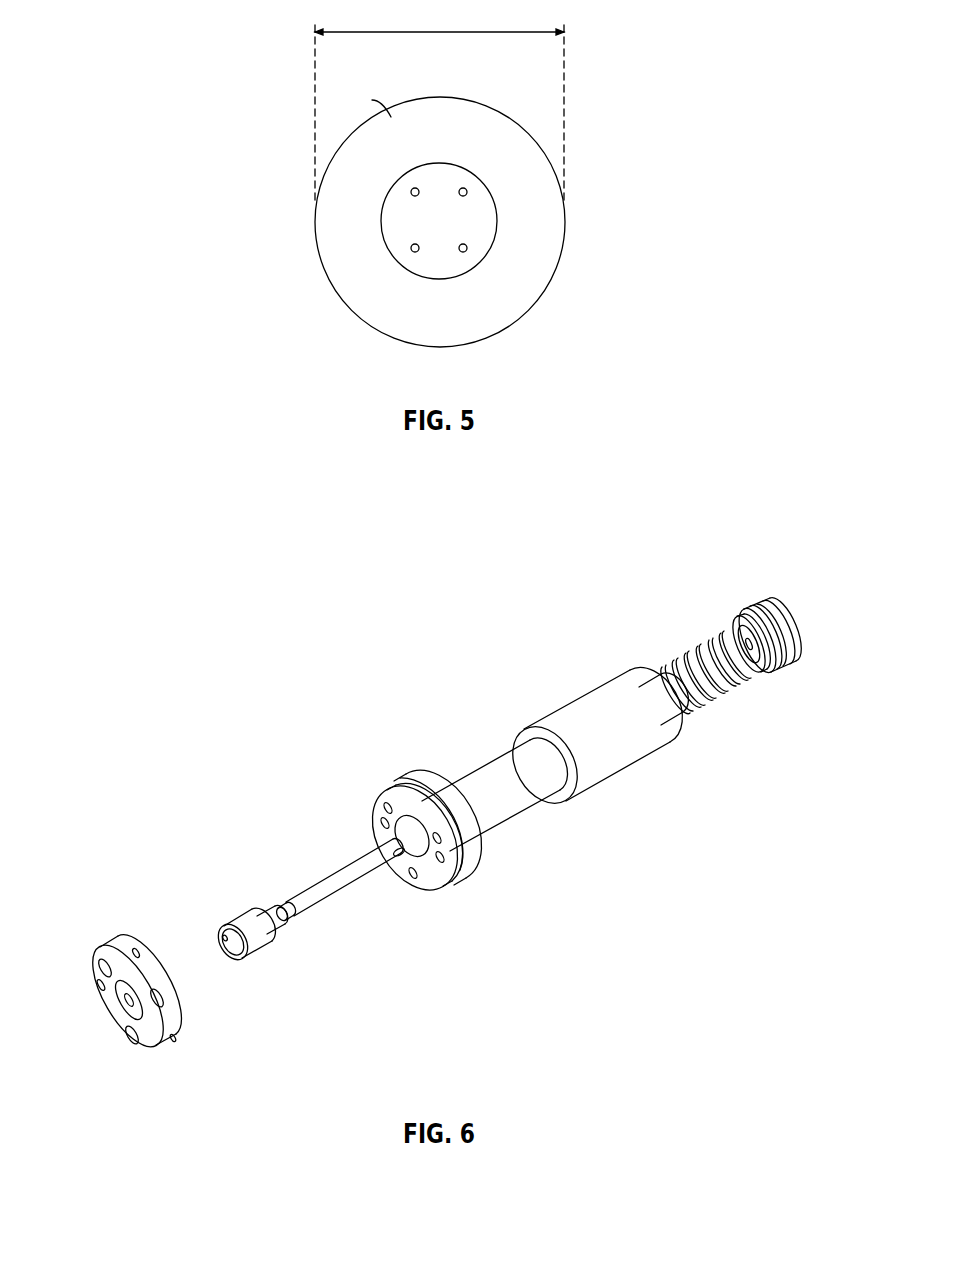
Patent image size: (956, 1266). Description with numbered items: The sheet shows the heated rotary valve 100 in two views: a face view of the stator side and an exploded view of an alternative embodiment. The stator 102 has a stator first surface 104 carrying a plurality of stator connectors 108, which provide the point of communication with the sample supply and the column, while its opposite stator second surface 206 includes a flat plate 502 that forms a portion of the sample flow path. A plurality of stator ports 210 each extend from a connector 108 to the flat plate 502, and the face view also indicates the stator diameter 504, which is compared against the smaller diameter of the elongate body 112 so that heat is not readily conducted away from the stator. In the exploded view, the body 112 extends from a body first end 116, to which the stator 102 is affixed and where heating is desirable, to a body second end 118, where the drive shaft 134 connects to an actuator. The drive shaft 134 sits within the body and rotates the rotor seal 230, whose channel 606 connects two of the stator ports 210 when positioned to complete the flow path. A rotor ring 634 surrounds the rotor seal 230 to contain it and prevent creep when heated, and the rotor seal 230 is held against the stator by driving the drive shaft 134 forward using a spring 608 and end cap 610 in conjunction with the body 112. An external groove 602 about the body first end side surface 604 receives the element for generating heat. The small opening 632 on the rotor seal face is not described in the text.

In FIG. 6, the heated rotary valve 100 is at (728, 556).
In FIG. 5, the stator 102 is at (440, 97).
In FIG. 6, the stator 102 is at (115, 957).
In FIG. 6, the stator first surface 104 is at (147, 1048).
In FIG. 6, the stator connectors 108 is at (148, 985).
In FIG. 6, the elongate body 112 is at (590, 690).
In FIG. 6, the body first end 116 is at (448, 845).
In FIG. 6, the body second end 118 is at (672, 723).
In FIG. 6, the drive shaft 134 is at (337, 872).
In FIG. 5, the stator second surface 206 is at (361, 102).
In FIG. 5, the stator ports 210 is at (412, 189).
In FIG. 6, the rotor seal 230 is at (241, 947).
In FIG. 5, the flat plate 502 is at (397, 213).
In FIG. 5, the stator diameter 504 is at (446, 30).
In FIG. 6, the external groove 602 is at (460, 853).
In FIG. 6, the body first end side surface 604 is at (445, 883).
In FIG. 6, the channel 606 is at (225, 937).
In FIG. 6, the spring 608 is at (707, 702).
In FIG. 6, the end cap 610 is at (788, 660).
In FIG. 6, the cap hole 632 is at (223, 933).
In FIG. 6, the rotor ring 634 is at (253, 948).